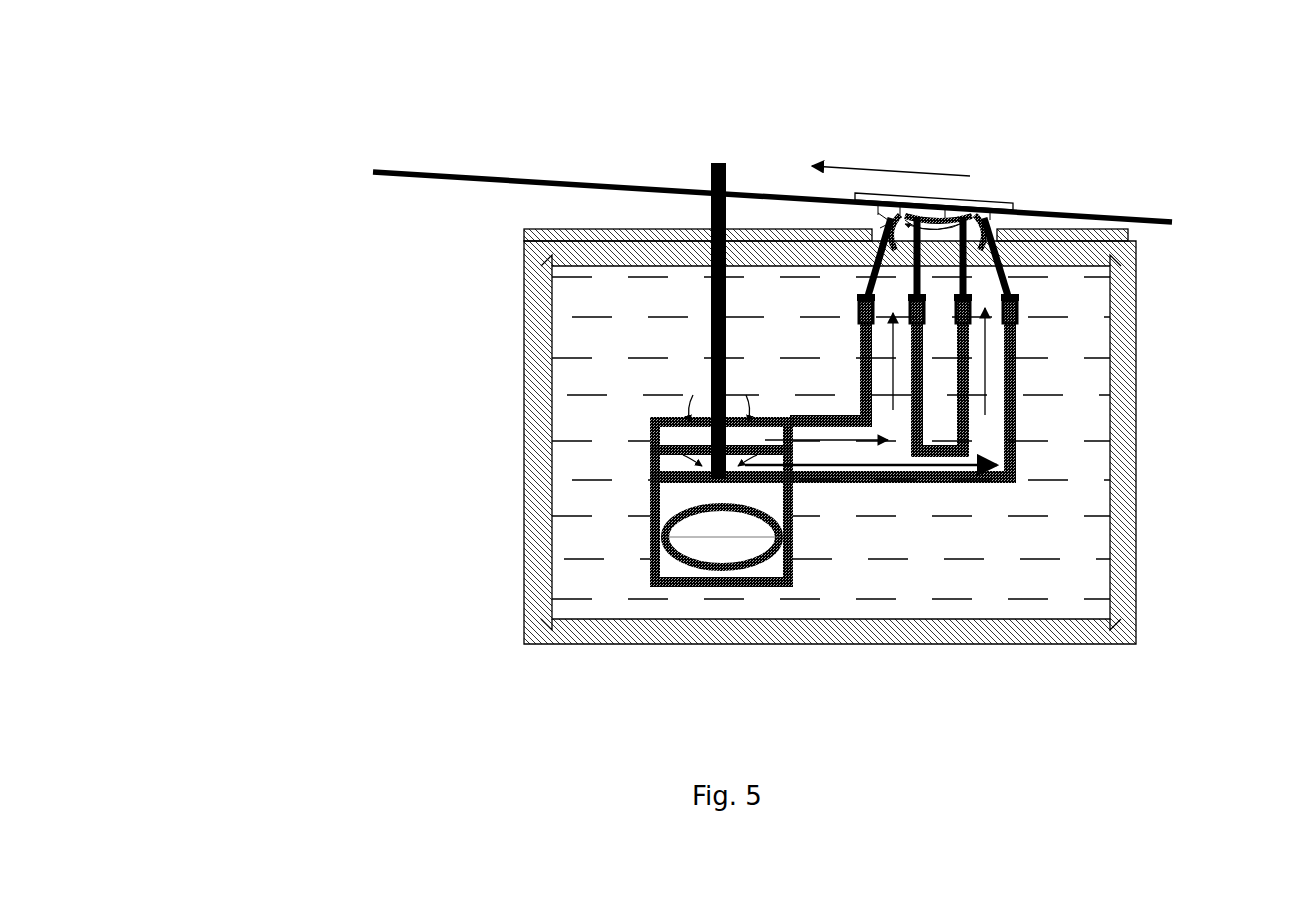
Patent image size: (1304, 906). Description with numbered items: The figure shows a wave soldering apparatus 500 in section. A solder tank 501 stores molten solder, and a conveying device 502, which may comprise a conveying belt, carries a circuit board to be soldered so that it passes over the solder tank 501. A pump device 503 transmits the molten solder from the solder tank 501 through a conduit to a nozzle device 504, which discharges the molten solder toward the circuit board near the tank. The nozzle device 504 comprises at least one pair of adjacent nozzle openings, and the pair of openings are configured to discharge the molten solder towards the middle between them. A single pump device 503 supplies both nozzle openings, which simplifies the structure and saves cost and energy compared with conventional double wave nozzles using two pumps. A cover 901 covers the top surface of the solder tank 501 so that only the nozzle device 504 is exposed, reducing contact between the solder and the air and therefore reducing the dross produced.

The wave soldering apparatus 500 is at (714, 341).
The solder tank 501 is at (1137, 532).
The conveying device 502 is at (502, 175).
The pump device 503 is at (693, 500).
The nozzle device 504 is at (1013, 207).
The cover 901 is at (1102, 230).